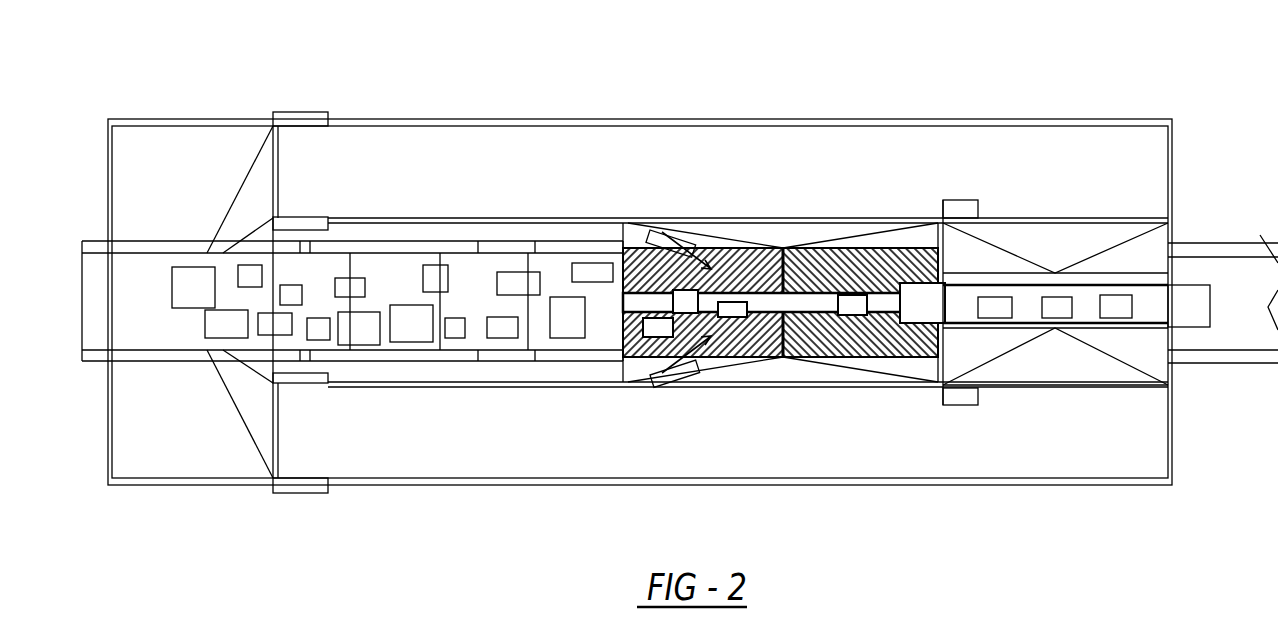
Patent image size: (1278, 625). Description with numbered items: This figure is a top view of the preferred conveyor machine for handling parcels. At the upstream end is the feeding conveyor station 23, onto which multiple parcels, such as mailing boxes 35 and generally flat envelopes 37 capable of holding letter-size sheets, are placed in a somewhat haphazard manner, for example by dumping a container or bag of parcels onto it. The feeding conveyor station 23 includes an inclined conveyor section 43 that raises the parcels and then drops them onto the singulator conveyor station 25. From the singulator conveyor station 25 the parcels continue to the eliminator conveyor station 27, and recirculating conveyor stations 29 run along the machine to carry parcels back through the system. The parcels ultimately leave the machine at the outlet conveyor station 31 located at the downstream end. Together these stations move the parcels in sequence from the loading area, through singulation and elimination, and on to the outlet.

The feeding conveyor station 23 is at (465, 280).
The singulator conveyor station 25 is at (725, 248).
The eliminator conveyor station 27 is at (867, 250).
The recirculating conveyor stations 29 is at (595, 143).
The outlet conveyor station 31 is at (1240, 280).
The mailing boxes 35 is at (187, 275).
The flat envelopes 37 is at (433, 280).
The inclined conveyor section 43 is at (603, 337).